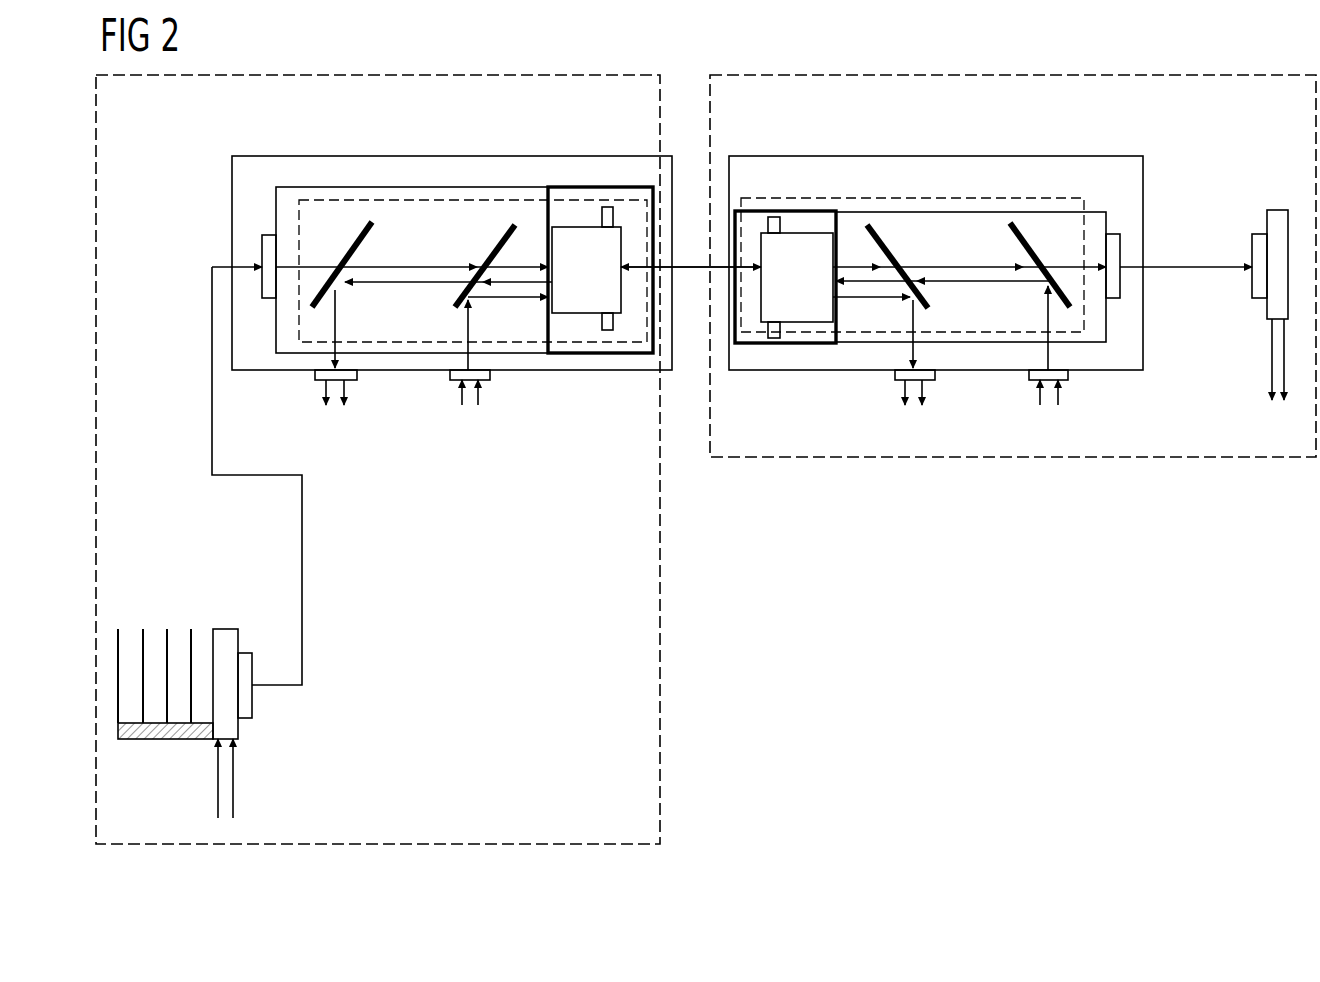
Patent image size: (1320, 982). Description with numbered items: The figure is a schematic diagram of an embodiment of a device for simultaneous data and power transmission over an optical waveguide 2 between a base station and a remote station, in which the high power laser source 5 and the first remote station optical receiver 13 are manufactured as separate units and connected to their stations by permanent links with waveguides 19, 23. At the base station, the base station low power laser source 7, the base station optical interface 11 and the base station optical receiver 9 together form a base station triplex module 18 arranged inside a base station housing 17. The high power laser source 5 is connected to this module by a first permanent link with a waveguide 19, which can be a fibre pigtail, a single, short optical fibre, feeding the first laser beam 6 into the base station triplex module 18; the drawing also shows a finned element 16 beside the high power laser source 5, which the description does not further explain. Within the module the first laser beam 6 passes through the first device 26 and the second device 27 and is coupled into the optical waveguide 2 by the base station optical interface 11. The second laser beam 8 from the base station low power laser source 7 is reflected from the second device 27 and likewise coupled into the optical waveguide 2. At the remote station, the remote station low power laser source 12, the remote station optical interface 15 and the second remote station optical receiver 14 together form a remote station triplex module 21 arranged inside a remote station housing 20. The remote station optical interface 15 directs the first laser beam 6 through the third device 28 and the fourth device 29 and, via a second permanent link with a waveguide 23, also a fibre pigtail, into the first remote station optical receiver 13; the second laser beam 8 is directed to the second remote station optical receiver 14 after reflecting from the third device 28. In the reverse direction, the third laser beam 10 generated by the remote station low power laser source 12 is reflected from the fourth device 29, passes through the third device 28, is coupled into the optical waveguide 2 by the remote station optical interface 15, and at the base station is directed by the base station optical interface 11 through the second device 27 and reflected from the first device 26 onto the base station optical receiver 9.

The optical waveguide 2 is at (689, 283).
The high power laser source 5 is at (226, 635).
The first laser beam 6 is at (535, 265).
The base station low power laser source 7 is at (490, 382).
The second laser beam 8 is at (527, 297).
The base station optical receiver 9 is at (357, 382).
The third laser beam 10 is at (538, 277).
The base station optical interface 11 is at (627, 187).
The remote station low power laser source 12 is at (1073, 382).
The first remote station optical receiver 13 is at (1272, 208).
The second remote station optical receiver 14 is at (936, 382).
The remote station optical interface 15 is at (838, 200).
The heat sink 16 is at (147, 723).
The base station housing 17 is at (280, 156).
The base station triplex module 18 is at (414, 187).
The waveguide 19 is at (302, 568).
The remote station housing 20 is at (1090, 155).
The remote station triplex module 21 is at (1058, 211).
The waveguide 23 is at (1187, 262).
The first device 26 is at (360, 222).
The second device 27 is at (497, 222).
The third device 28 is at (884, 222).
The fourth device 29 is at (1012, 222).